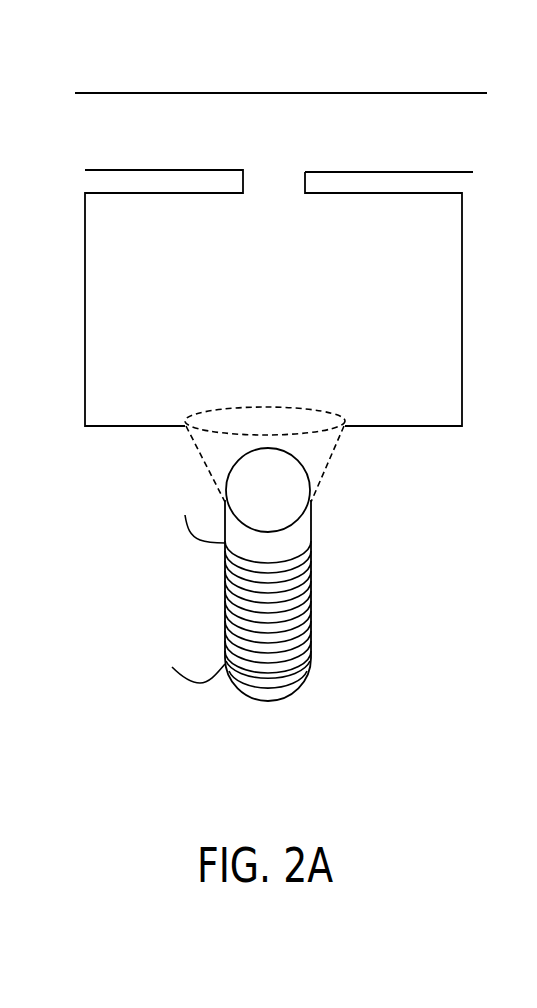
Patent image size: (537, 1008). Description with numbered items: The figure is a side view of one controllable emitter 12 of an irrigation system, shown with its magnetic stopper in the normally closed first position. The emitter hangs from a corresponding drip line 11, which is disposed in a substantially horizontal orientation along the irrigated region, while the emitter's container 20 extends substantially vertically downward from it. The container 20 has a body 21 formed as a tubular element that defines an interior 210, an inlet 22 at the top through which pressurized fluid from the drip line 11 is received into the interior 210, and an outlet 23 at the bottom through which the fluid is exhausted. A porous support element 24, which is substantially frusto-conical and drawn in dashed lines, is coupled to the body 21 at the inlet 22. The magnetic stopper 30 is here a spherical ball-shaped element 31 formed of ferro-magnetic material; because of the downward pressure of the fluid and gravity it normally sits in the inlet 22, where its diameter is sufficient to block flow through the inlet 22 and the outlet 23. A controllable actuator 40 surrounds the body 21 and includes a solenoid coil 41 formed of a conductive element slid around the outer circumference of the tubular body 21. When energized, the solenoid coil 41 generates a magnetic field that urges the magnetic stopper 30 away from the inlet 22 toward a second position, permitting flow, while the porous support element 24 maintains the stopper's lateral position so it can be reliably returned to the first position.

The drip line 11 is at (385, 92).
The controllable emitter 12 is at (301, 600).
The container 20 is at (311, 547).
The body 21 is at (225, 598).
The inlet 22 is at (298, 523).
The outlet 23 is at (277, 703).
The porous support element 24 is at (198, 447).
The magnetic stopper 30 is at (312, 487).
The spherical ball-shaped element 31 is at (250, 485).
The controllable actuator 40 is at (183, 532).
The solenoid coil 41 is at (298, 612).
The interior 210 is at (315, 575).